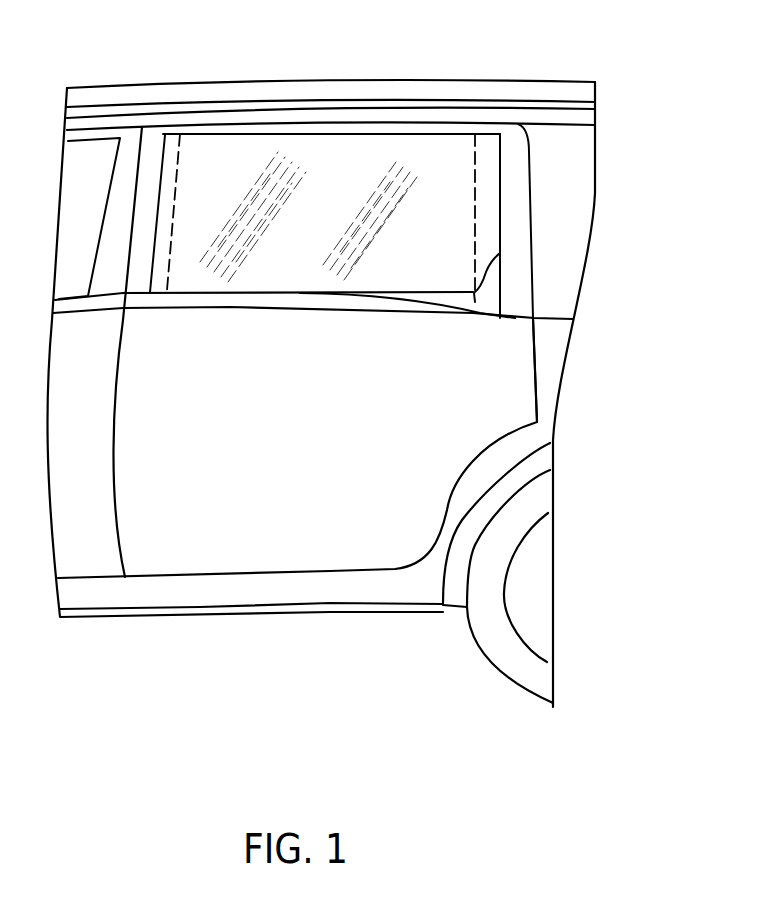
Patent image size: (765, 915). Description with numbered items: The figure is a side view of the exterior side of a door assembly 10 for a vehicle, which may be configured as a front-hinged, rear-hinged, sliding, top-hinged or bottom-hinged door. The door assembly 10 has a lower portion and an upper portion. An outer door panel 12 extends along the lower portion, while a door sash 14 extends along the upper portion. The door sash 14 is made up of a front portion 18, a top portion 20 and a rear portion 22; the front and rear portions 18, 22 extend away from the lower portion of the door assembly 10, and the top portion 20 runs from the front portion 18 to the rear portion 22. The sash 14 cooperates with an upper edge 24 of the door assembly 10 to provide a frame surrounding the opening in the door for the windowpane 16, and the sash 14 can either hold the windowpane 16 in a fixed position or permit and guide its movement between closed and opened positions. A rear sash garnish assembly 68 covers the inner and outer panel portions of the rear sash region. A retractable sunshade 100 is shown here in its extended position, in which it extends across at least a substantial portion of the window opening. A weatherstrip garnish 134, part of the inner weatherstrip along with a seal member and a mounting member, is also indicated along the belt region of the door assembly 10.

The door assembly 10 is at (183, 585).
The outer door panel 12 is at (283, 552).
The door sash 14 is at (366, 214).
The front portion 18 is at (160, 203).
The top portion 20 is at (417, 131).
The rear portion 22 is at (518, 278).
The windowpane 16 is at (330, 150).
The upper edge 24 is at (228, 293).
The rear sash garnish assembly 68 is at (492, 303).
The sunshade 100 is at (475, 207).
The weatherstrip garnish 134 is at (452, 300).